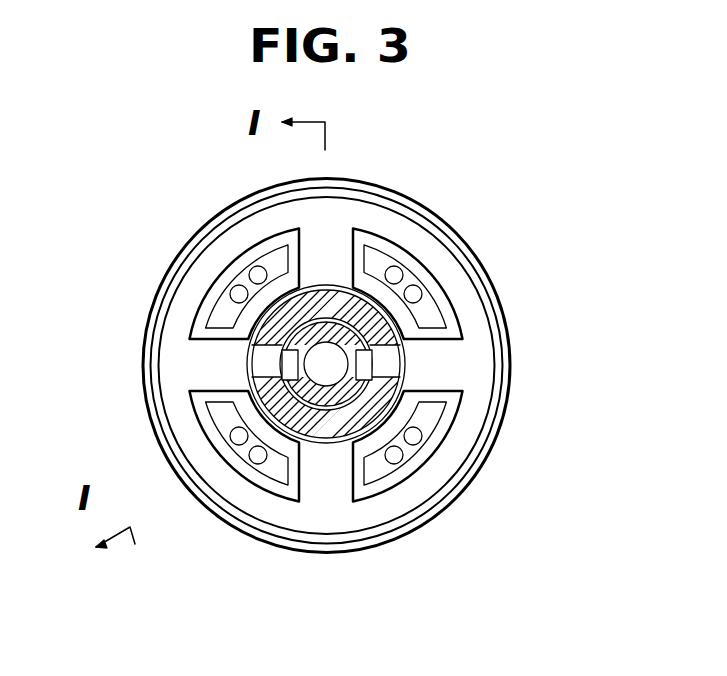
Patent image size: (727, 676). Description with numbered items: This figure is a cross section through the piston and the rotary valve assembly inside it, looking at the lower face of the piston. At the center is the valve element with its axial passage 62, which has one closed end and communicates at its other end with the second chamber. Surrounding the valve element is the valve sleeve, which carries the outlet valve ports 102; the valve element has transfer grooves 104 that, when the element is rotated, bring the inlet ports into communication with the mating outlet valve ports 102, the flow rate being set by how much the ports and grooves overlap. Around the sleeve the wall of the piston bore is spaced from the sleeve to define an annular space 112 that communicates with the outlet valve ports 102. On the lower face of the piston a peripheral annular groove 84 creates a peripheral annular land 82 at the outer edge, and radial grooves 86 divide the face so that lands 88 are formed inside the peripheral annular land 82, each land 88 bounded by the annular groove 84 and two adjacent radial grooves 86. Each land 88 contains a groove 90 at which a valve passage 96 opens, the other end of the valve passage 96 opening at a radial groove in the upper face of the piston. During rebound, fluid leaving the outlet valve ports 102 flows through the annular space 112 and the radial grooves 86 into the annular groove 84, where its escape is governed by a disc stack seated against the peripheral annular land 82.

The axial passage 62 is at (322, 370).
The peripheral annular land 82 is at (409, 197).
The peripheral annular groove 84 is at (422, 240).
The radial grooves 86 is at (333, 265).
The lands 88 is at (197, 314).
The groove 90 is at (278, 255).
The valve passages 96 is at (236, 292).
The outlet valve ports 102 is at (272, 357).
The transfer grooves 104 is at (252, 318).
The annular space 112 is at (433, 407).